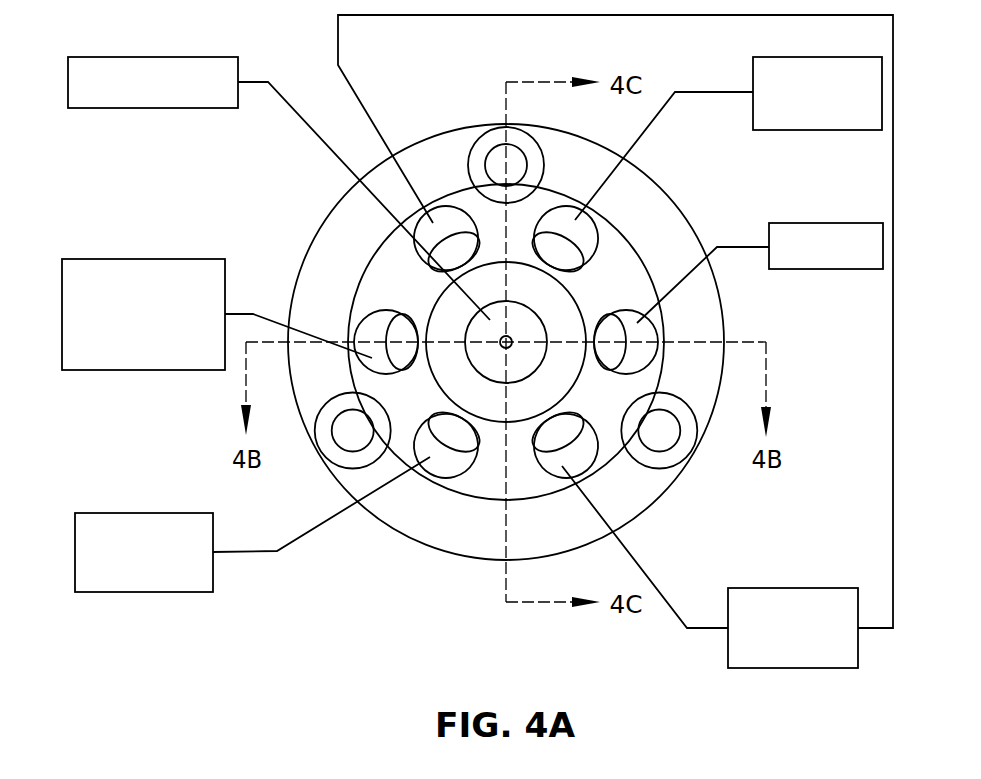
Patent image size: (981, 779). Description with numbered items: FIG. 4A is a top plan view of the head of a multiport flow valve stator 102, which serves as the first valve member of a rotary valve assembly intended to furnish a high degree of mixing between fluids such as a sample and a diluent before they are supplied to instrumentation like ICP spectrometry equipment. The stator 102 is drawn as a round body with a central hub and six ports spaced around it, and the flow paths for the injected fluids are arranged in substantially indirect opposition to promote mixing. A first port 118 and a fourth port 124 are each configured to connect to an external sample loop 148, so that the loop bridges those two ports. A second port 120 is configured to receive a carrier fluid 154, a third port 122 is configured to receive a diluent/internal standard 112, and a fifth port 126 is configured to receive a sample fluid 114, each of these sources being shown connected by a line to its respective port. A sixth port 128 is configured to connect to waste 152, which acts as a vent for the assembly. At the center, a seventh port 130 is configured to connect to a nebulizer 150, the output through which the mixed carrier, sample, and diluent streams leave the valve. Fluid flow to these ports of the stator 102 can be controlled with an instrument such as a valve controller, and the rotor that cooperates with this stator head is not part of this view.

The stator 102 is at (647, 172).
The diluent/internal standard 112 is at (143, 259).
The sample fluid 114 is at (765, 57).
The first port 118 is at (573, 462).
The second port 120 is at (453, 467).
The third port 122 is at (373, 337).
The fourth port 124 is at (423, 237).
The fifth port 126 is at (588, 240).
The sixth port 128 is at (640, 333).
The seventh port 130 is at (477, 338).
The sample loop 148 is at (793, 588).
The nebulizer 150 is at (152, 57).
The waste 152 is at (820, 223).
The carrier fluid 154 is at (145, 513).